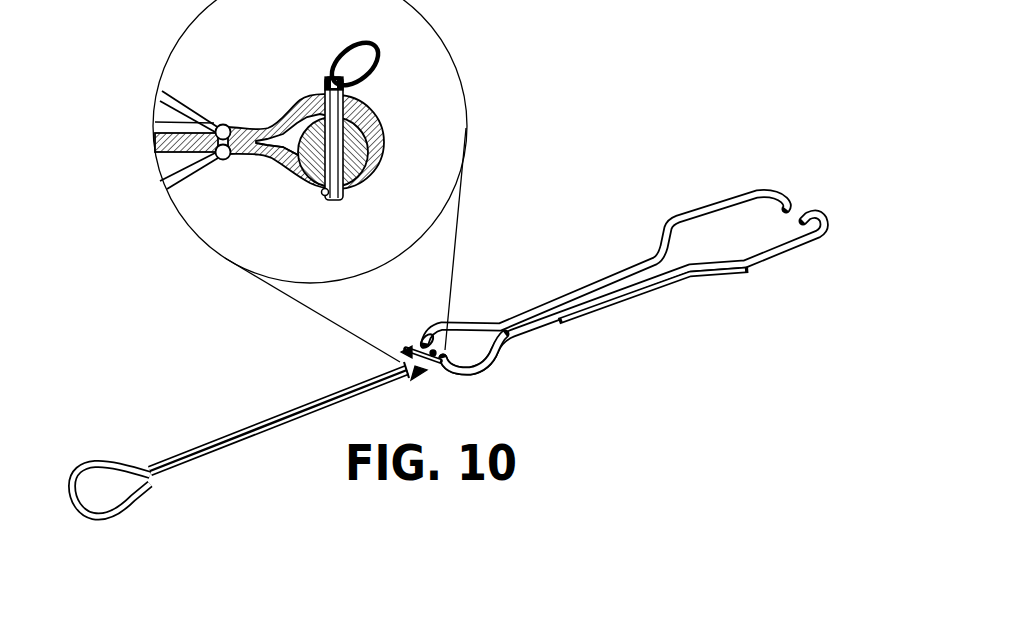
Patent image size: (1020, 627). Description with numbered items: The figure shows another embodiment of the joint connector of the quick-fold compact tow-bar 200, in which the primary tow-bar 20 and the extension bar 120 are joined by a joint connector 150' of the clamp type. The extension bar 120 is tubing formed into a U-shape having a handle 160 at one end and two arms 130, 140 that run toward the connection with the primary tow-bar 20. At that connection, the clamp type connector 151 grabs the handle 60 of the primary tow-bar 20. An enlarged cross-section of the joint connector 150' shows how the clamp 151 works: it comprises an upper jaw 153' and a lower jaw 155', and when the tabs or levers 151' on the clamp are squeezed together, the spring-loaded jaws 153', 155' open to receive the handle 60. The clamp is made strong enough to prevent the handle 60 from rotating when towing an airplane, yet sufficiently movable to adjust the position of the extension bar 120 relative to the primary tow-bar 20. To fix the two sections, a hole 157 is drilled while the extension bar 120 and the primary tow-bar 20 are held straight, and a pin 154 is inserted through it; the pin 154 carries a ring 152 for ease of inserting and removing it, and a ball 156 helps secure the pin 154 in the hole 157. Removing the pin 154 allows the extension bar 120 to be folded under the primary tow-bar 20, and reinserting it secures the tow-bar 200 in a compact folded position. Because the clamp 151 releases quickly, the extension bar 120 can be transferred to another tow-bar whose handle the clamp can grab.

The quick-fold compact tow-bar 200 is at (448, 278).
The primary tow-bar 20 is at (624, 282).
The handle 60 is at (488, 366).
The extension bar 120 is at (239, 434).
The arm 130 is at (258, 432).
The arm 140 is at (232, 437).
The handle 160 is at (120, 516).
The joint connector 150' is at (310, 189).
The clamp type connector 151 is at (306, 225).
The clamp lever 151' is at (199, 167).
The ring 152 is at (363, 45).
The upper jaw 153' is at (269, 141).
The pin 154 is at (348, 147).
The lower jaw 155' is at (280, 168).
The ball 156 is at (322, 194).
The hole 157 is at (325, 104).